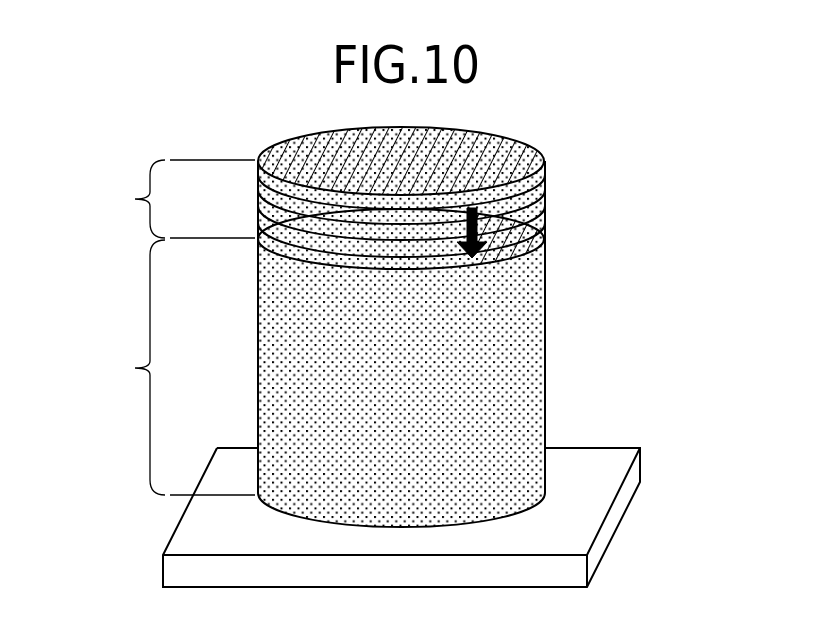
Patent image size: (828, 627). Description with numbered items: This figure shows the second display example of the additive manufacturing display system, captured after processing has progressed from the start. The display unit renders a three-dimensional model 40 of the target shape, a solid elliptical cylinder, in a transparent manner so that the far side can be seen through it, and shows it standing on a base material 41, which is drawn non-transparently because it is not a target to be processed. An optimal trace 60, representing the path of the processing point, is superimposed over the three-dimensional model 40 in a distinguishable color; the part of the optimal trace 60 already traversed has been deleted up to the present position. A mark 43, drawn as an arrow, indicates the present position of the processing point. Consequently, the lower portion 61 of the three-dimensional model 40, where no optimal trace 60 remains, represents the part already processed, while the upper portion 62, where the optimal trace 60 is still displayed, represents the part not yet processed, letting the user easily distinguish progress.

The 3D model 40 is at (547, 268).
The base material 41 is at (190, 545).
The mark 43 is at (478, 219).
The optimal trace 60 is at (531, 211).
The portion having completed being processed 61 is at (179, 367).
The portion not having been processed yet 62 is at (179, 199).